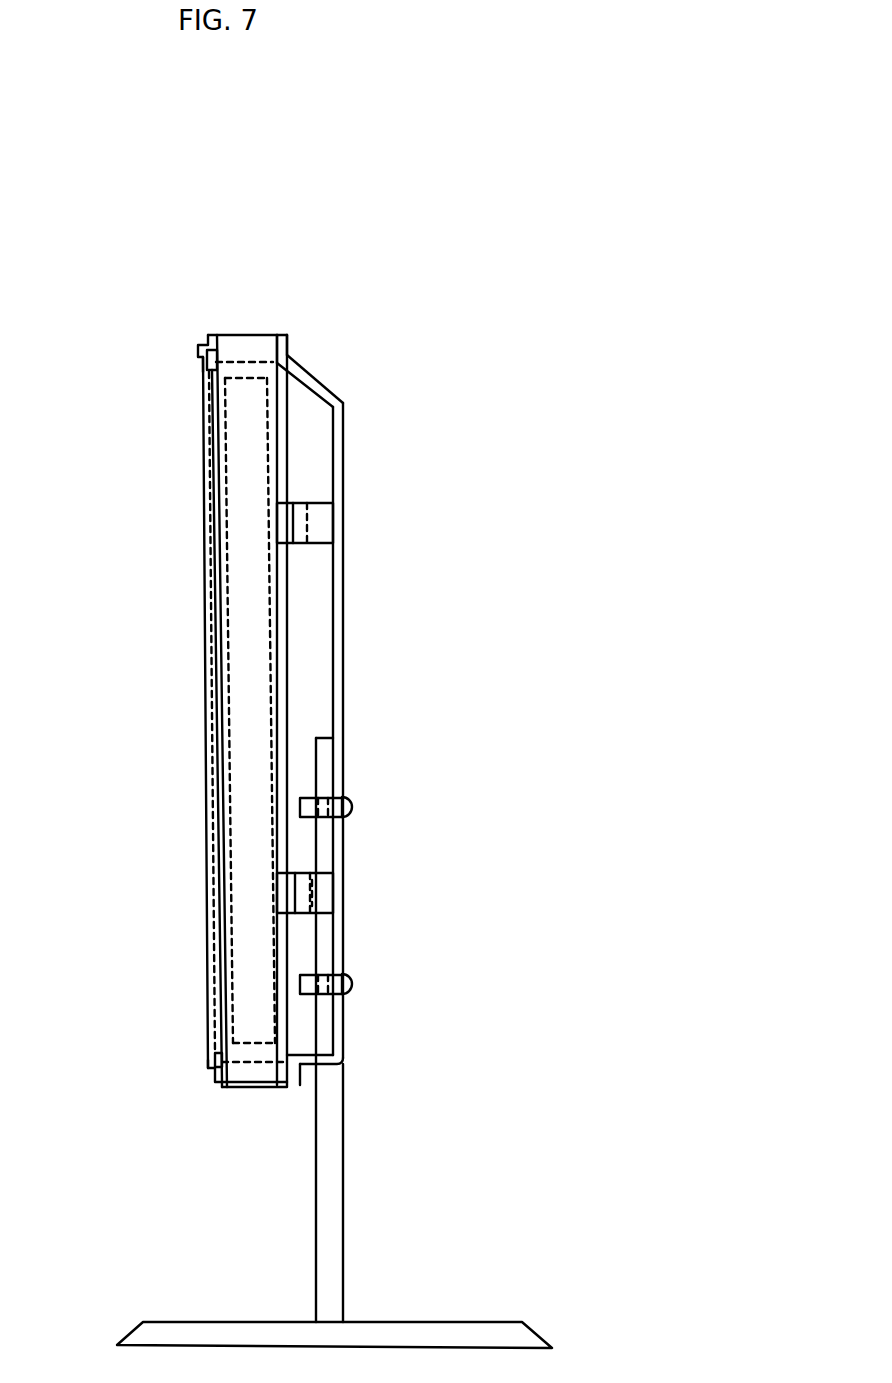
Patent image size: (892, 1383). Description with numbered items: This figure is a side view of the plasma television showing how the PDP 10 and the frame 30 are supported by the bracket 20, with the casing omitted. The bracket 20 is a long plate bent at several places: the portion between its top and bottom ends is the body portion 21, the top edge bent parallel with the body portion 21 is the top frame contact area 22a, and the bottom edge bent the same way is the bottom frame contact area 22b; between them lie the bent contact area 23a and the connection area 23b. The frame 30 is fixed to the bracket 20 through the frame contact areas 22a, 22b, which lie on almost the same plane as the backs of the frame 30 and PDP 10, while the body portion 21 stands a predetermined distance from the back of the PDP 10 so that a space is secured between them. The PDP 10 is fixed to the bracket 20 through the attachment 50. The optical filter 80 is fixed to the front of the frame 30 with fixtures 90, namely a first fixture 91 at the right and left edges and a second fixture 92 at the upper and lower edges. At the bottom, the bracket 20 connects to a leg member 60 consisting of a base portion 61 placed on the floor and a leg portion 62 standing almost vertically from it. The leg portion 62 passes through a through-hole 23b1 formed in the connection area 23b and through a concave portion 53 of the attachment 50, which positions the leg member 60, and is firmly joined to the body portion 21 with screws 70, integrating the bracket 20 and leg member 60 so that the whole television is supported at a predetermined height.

The PDP 10 is at (228, 748).
The bracket 20 is at (357, 740).
The body portion 21 is at (345, 645).
The top frame contact area 22a is at (292, 345).
The bottom frame contact area 22b is at (300, 1085).
The contact area 23a is at (325, 383).
The connection area 23b is at (317, 1080).
The through-hole 23b1 is at (350, 1067).
The frame 30 is at (245, 333).
The attachment 50 is at (322, 523).
The concave portion 53 is at (322, 898).
The leg member 60 is at (343, 1043).
The base portion 61 is at (334, 1299).
The leg portion 62 is at (343, 1205).
The screws 70 is at (362, 803).
The optical filter 80 is at (215, 1060).
The fixtures 90 is at (135, 715).
The first fixture 91 is at (203, 472).
The second fixture 92 is at (197, 342).